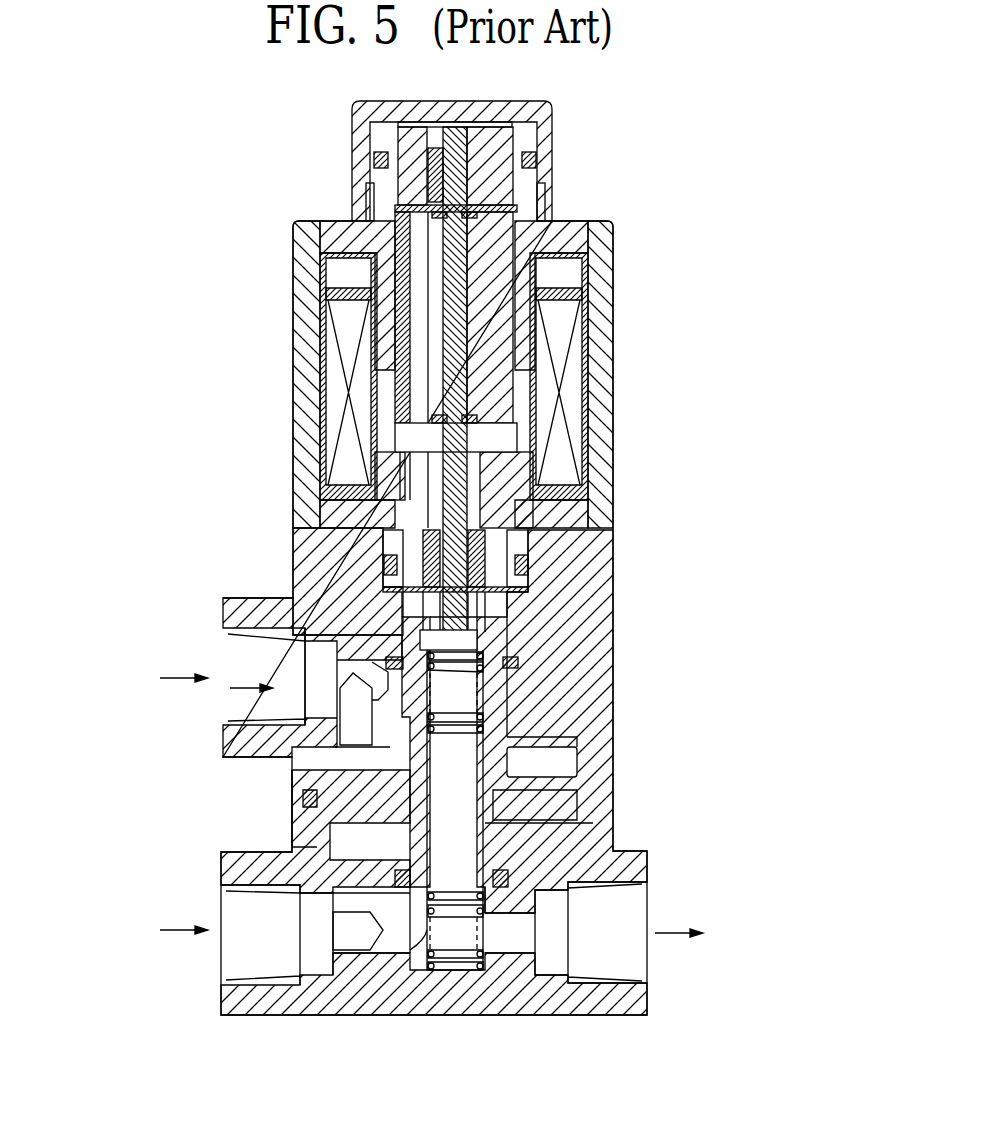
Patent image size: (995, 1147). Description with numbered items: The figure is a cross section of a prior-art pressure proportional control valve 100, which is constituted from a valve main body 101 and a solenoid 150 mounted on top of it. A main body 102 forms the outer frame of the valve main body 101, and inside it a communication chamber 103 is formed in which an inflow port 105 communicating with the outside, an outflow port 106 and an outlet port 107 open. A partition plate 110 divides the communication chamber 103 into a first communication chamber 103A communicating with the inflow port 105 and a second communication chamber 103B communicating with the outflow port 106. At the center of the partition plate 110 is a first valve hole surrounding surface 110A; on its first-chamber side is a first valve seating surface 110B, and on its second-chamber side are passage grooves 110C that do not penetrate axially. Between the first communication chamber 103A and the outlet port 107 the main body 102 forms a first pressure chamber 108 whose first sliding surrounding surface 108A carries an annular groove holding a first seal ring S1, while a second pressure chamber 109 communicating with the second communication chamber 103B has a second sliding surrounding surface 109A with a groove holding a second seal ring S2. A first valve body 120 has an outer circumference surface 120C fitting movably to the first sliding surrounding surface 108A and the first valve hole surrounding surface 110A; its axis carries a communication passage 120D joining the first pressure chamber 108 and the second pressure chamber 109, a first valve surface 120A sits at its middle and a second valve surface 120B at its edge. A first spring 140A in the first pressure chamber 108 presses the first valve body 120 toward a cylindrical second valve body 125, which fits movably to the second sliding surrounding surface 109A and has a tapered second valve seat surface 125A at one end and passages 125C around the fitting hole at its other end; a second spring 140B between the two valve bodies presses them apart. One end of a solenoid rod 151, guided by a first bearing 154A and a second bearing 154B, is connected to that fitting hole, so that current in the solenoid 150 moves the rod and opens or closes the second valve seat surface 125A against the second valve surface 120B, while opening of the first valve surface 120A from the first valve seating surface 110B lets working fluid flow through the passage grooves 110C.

The pressure proportional control valve 100 is at (620, 222).
The solenoid 150 is at (293, 359).
The solenoid rod 151 is at (455, 434).
The first bearing 154A is at (485, 537).
The second bearing 154B is at (427, 178).
The valve main body 101 is at (294, 557).
The main body 102 is at (222, 618).
The communication chamber 103 is at (300, 813).
The first communication chamber 103A is at (345, 850).
The second communication chamber 103B is at (350, 766).
The inflow port 105 is at (250, 955).
The outflow port 106 is at (250, 700).
The outlet port 107 is at (613, 953).
The first pressure chamber 108 is at (425, 955).
The first sliding surrounding surface 108A is at (415, 930).
The second pressure chamber 109 is at (540, 582).
The second sliding surrounding surface 109A is at (512, 632).
The partition plate 110 is at (330, 796).
The first valve hole surrounding surface 110A is at (505, 818).
The first valve seating surface 110B is at (400, 881).
The passage grooves 110C is at (560, 752).
The first valve body 120 is at (498, 843).
The first valve surface 120A is at (473, 838).
The second valve surface 120B is at (510, 692).
The outer circumference surface 120C is at (537, 897).
The communication passage 120D is at (577, 780).
The second valve body 125 is at (505, 680).
The second valve seat surface 125A is at (490, 722).
The passages 125C is at (386, 653).
The first spring 140A is at (470, 965).
The second spring 140B is at (420, 668).
The first seal ring S1 is at (400, 901).
The second seal ring S2 is at (520, 660).